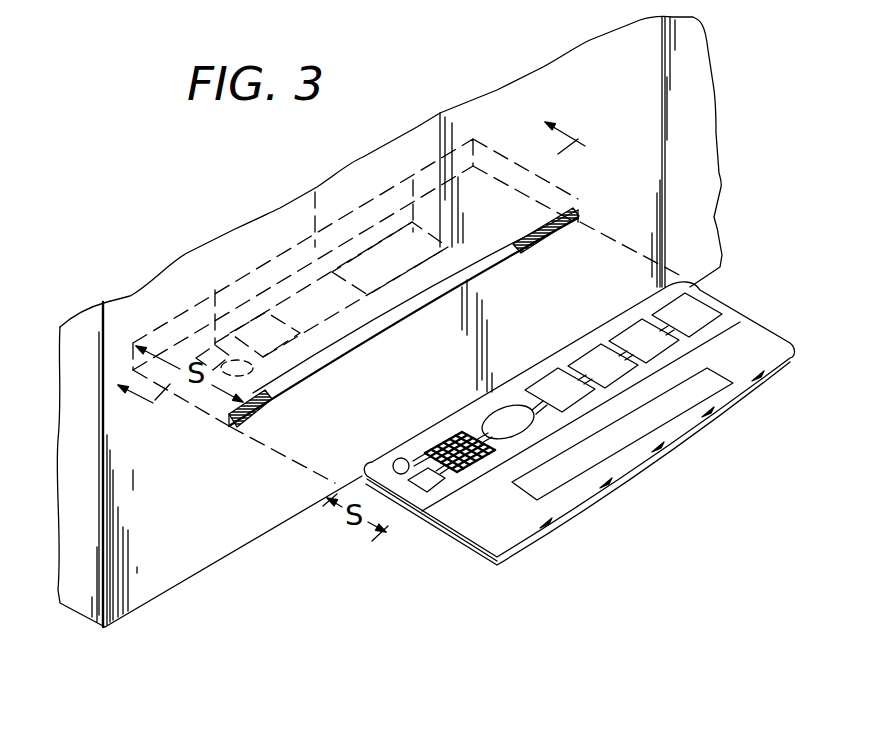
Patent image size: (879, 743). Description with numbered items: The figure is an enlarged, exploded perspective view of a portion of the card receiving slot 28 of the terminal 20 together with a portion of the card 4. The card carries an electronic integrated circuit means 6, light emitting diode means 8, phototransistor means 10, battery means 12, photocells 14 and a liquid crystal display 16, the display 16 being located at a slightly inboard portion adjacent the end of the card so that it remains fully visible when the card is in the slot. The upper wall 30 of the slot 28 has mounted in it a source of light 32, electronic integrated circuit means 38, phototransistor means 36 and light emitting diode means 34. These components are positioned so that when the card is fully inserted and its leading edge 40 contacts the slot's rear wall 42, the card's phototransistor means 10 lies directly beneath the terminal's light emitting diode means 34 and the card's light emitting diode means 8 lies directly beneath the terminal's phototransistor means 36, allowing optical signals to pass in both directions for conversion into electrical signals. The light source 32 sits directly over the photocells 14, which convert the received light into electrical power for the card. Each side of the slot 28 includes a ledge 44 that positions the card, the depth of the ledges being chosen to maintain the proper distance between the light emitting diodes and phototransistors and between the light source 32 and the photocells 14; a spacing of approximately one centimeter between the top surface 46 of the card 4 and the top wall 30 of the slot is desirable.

The card 4 is at (361, 276).
The electronic integrated circuit means 6 is at (455, 428).
The light emitting diode means 8 is at (402, 458).
The phototransistor means 10 is at (437, 482).
The battery means 12 is at (507, 407).
The photocells 14 is at (663, 312).
The liquid crystal display 16 is at (670, 412).
The terminal 20 is at (85, 600).
The card receiving slot 28 is at (520, 247).
The upper wall 30 is at (405, 300).
The source of light 32 is at (410, 182).
The light emitting diode means 34 is at (270, 385).
The phototransistor means 36 is at (219, 290).
The electronic integrated circuit means 38 is at (288, 327).
The leading edge 40 is at (553, 355).
The rear wall 42 is at (315, 194).
The ledge 44 is at (560, 214).
The top surface 46 is at (527, 520).